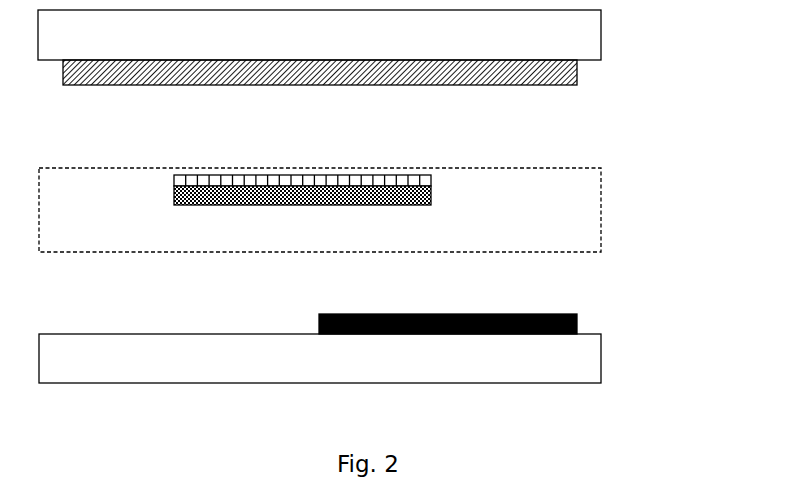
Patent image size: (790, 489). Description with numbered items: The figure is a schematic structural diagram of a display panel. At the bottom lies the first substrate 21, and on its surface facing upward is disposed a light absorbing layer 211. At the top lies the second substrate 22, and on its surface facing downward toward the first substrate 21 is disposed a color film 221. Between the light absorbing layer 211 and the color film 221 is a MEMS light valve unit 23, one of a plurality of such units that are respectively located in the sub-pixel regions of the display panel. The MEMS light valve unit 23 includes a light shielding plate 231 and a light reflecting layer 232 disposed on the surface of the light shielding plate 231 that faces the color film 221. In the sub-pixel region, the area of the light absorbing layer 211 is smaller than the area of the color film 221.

The first substrate 21 is at (601, 360).
The light absorbing layer 211 is at (577, 323).
The second substrate 22 is at (601, 36).
The color film 221 is at (577, 73).
The MEMS light valve unit 23 is at (601, 211).
The light shielding plate 231 is at (232, 205).
The light reflecting layer 232 is at (283, 180).